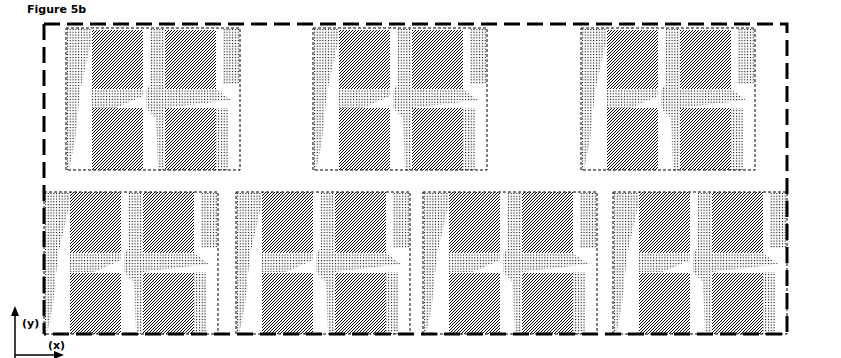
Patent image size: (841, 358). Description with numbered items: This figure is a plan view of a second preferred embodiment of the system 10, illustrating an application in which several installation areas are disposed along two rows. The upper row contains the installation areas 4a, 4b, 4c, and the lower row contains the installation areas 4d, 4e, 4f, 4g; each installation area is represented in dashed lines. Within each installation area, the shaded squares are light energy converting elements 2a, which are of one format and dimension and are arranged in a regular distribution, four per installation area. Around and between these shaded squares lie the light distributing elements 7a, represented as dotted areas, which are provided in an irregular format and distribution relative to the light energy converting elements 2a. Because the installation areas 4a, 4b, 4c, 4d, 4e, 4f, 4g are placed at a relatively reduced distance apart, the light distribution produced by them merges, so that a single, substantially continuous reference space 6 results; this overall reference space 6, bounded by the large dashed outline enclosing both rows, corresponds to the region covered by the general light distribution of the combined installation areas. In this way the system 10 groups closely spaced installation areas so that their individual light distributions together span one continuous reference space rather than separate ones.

The system 10 is at (397, 179).
The reference space 6 is at (33, 179).
The light distributing element 7a is at (153, 99).
The light energy converting element 2a is at (416, 182).
The installation area 4a is at (144, 99).
The installation area 4b is at (389, 99).
The installation area 4c is at (655, 99).
The installation area 4d is at (131, 255).
The installation area 4e is at (323, 255).
The installation area 4f is at (510, 255).
The installation area 4g is at (700, 255).